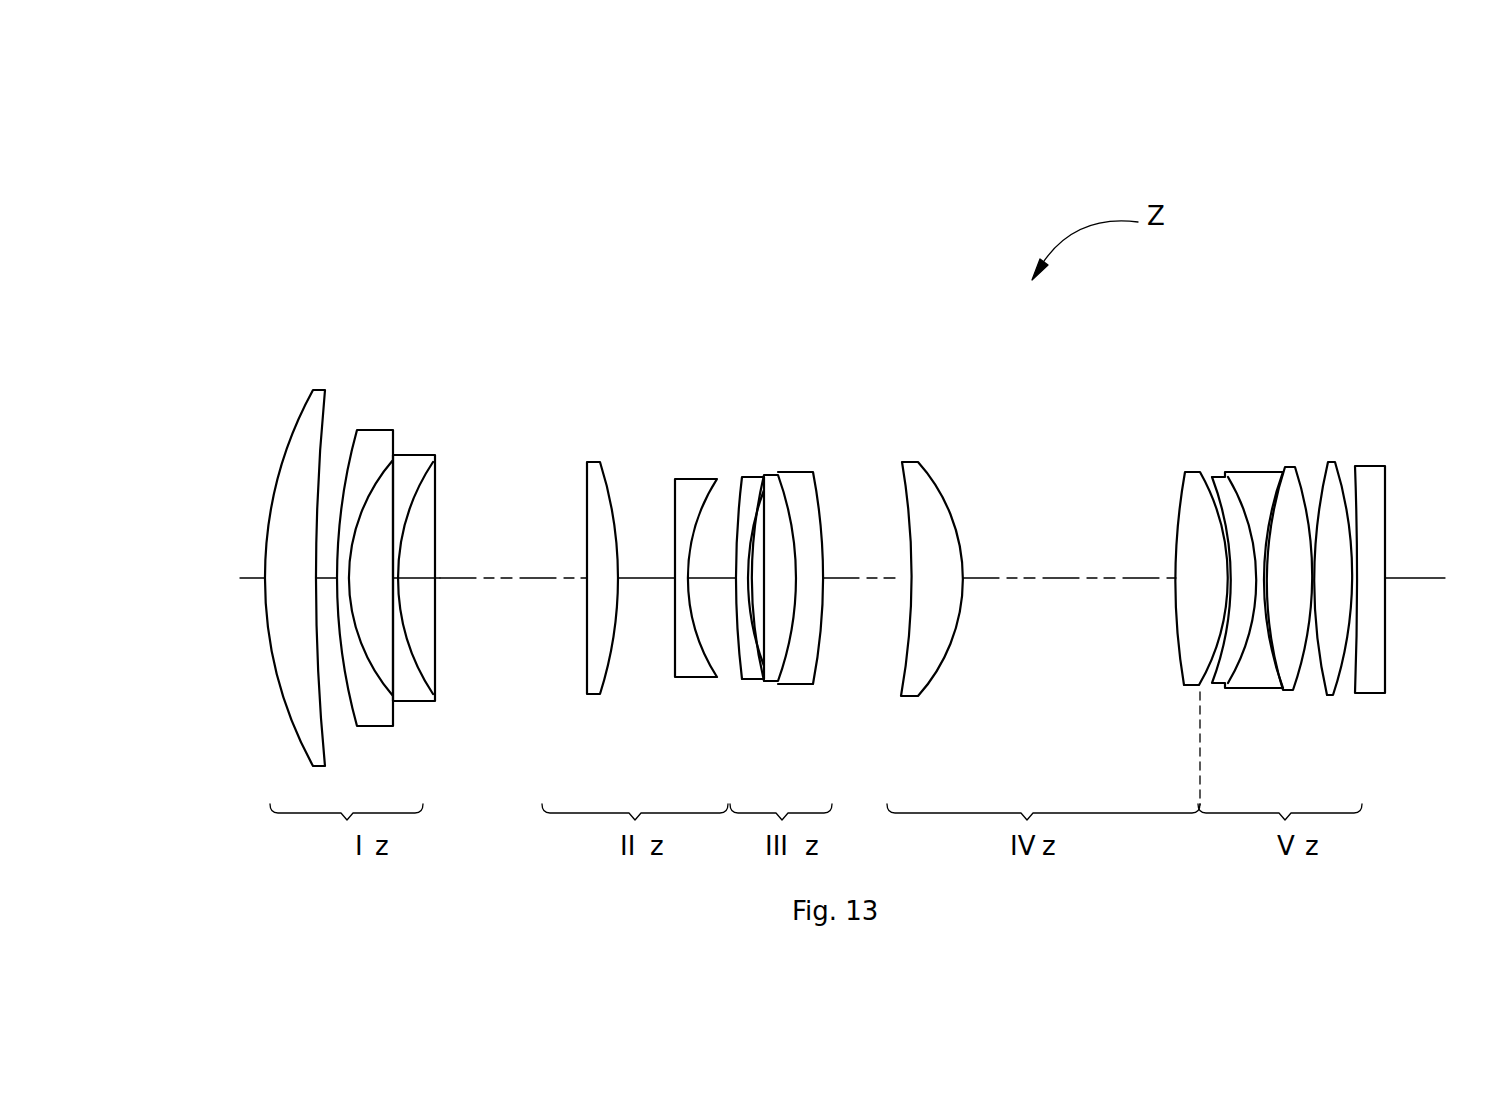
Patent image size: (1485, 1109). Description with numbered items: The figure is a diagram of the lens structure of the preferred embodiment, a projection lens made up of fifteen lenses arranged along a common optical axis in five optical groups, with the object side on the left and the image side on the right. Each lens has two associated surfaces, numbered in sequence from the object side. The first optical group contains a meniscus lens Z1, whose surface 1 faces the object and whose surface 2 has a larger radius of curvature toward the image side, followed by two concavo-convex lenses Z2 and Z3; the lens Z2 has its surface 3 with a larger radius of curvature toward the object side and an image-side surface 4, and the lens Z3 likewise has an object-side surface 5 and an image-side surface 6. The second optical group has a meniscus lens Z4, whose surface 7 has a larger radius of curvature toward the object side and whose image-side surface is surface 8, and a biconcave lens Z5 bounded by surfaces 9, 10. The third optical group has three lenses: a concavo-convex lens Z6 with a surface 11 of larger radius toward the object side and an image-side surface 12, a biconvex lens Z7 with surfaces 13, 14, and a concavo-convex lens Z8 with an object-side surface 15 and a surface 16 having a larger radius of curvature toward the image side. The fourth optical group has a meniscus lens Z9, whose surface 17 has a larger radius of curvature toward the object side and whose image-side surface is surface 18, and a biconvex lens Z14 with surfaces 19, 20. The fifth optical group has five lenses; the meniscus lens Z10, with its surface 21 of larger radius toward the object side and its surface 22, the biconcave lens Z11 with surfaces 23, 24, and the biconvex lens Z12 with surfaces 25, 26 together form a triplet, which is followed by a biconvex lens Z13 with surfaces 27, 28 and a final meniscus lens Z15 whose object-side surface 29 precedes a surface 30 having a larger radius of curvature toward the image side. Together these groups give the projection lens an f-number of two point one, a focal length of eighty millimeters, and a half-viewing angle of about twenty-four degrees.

The meniscus lens Z1 is at (295, 541).
The surface 1 is at (309, 541).
The surface 2 is at (325, 428).
The concavo-convex lens Z2 is at (391, 564).
The surface 3 is at (370, 619).
The surface 4 is at (375, 673).
The concavo-convex lens Z3 is at (458, 547).
The surface 5 is at (433, 547).
The surface 6 is at (432, 480).
The meniscus lens Z4 is at (573, 568).
The surface 7 is at (573, 614).
The surface 8 is at (605, 683).
The biconcave lens Z5 is at (667, 562).
The surface 9 is at (667, 528).
The surface 10 is at (707, 505).
The concavo-convex lens Z6 is at (723, 602).
The surface 11 is at (723, 631).
The surface 12 is at (752, 660).
The biconvex lens Z7 is at (789, 571).
The surface 13 is at (776, 518).
The surface 14 is at (768, 517).
The concavo-convex lens Z8 is at (830, 559).
The surface 15 is at (824, 610).
The surface 16 is at (822, 657).
The meniscus lens Z9 is at (937, 559).
The surface 17 is at (922, 559).
The surface 18 is at (935, 480).
The biconvex lens Z14 is at (1163, 630).
The surface 19 is at (1163, 630).
The surface 20 is at (1178, 670).
The meniscus lens Z10 is at (1234, 576).
The surface 21 is at (1234, 551).
The surface 22 is at (1261, 551).
The biconcave lens Z11 is at (1234, 576).
The surface 23 is at (1261, 610).
The surface 24 is at (1272, 653).
The biconvex lens Z12 is at (1307, 528).
The surface 25 is at (1307, 550).
The surface 26 is at (1317, 490).
The biconvex lens Z13 is at (1366, 558).
The surface 27 is at (1366, 628).
The surface 28 is at (1342, 672).
The meniscus lens Z15 is at (1408, 557).
The surface 29 is at (1393, 557).
The surface 30 is at (1387, 528).